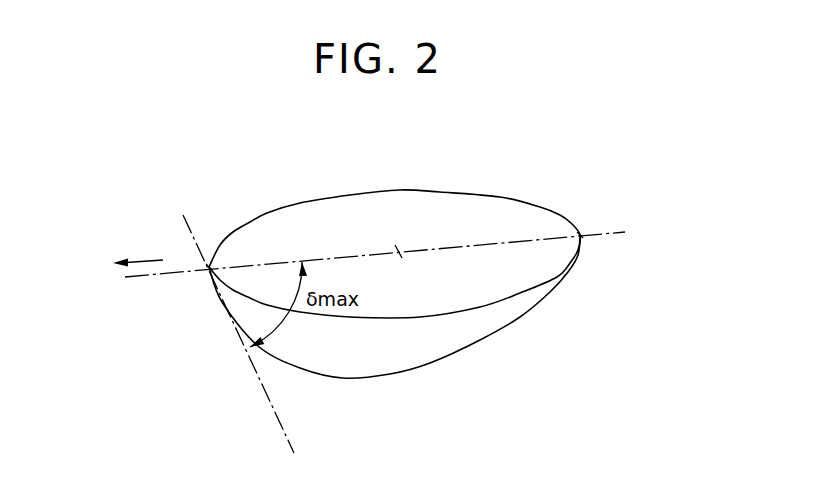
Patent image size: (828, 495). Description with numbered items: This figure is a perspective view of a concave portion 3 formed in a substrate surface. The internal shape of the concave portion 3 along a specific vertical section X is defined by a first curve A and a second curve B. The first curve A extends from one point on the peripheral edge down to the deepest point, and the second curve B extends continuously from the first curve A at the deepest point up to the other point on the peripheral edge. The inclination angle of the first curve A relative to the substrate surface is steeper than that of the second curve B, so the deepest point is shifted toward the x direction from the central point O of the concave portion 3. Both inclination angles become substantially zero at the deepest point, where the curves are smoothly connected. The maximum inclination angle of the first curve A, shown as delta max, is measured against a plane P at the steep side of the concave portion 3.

The concave portion 3 is at (500, 197).
The specific vertical section X is at (608, 236).
The tangent plane P is at (192, 205).
The central point O is at (406, 241).
The first curve A is at (210, 279).
The second curve B is at (582, 233).